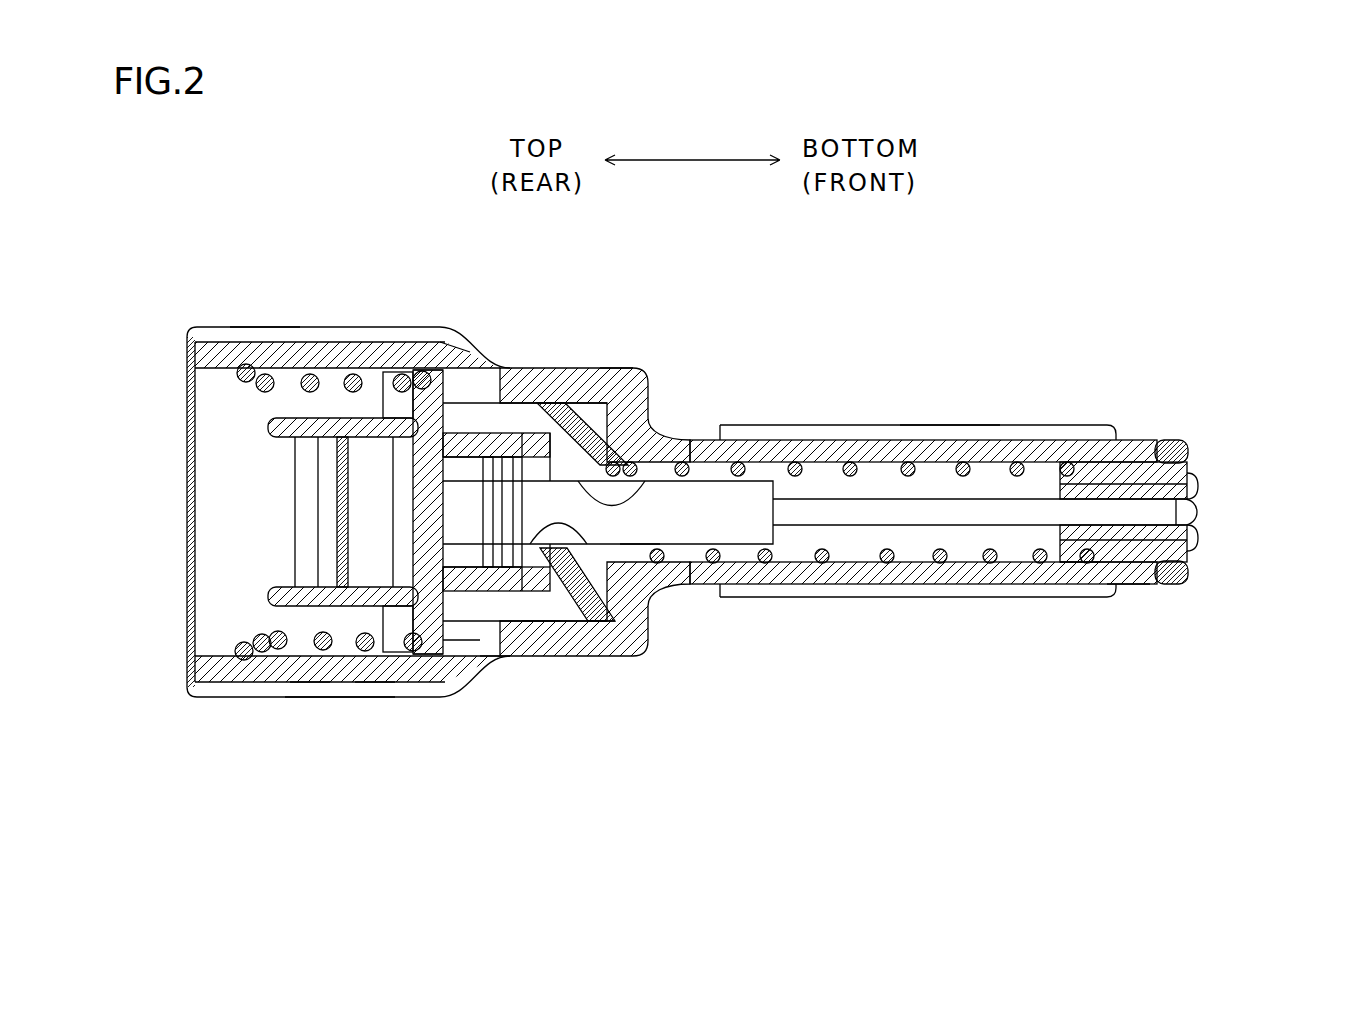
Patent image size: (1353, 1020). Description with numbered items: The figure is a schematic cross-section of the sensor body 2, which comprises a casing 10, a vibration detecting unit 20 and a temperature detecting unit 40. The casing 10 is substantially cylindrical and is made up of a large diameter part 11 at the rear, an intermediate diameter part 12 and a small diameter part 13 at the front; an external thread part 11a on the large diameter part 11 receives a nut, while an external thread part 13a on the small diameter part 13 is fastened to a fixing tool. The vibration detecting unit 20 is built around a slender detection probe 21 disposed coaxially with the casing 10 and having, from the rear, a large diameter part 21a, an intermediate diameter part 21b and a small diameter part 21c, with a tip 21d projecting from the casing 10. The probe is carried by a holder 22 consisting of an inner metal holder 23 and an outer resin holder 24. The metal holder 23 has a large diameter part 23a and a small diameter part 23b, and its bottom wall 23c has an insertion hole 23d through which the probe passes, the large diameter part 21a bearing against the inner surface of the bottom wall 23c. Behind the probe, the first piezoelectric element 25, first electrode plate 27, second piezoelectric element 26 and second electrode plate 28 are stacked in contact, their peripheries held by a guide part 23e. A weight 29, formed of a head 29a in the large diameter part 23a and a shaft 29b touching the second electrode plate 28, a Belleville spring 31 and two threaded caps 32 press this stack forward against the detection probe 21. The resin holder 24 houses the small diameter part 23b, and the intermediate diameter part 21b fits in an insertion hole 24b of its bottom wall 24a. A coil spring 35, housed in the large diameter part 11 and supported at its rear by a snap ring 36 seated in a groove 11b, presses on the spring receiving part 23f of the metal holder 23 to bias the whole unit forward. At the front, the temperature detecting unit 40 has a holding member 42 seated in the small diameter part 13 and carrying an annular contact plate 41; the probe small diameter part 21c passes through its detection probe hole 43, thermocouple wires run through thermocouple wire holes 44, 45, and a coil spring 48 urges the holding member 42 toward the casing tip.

The sensor body 2 is at (1062, 289).
The casing 10 is at (622, 351).
The large diameter part 11 is at (336, 335).
The external thread part 11a is at (247, 330).
The groove 11b is at (236, 375).
The intermediate diameter part 12 is at (578, 385).
The small diameter part 13 is at (905, 440).
The external thread part 13a is at (988, 440).
The vibration detecting unit 20 is at (345, 616).
The detection probe 21 is at (910, 544).
The large diameter part 21a is at (528, 655).
The intermediate diameter part 21b is at (637, 548).
The small diameter part 21c is at (1005, 525).
The tip 21d is at (1200, 512).
The holder 22 is at (508, 433).
The metal holder 23 is at (406, 395).
The large diameter part 23a is at (315, 390).
The small diameter part 23b is at (452, 345).
The bottom wall 23c is at (557, 433).
The insertion hole 23d is at (570, 622).
The guide part 23e is at (434, 698).
The spring receiving part 23f is at (449, 340).
The resin holder 24 is at (648, 388).
The bottom wall 24a is at (605, 630).
The insertion hole 24b is at (683, 432).
The first piezoelectric element 25 is at (508, 433).
The second piezoelectric element 26 is at (484, 433).
The first electrode plate 27 is at (493, 640).
The second electrode plate 28 is at (460, 640).
The weight 29 is at (395, 762).
The head 29a is at (308, 698).
The shaft 29b is at (373, 698).
The Belleville spring 31 is at (370, 541).
The caps 32 is at (325, 523).
The coil spring 35 is at (310, 394).
The snap ring 36 is at (236, 648).
The temperature detecting unit 40 is at (1200, 470).
The contact plate 41 is at (1192, 537).
The holding member 42 is at (1122, 462).
The detection probe hole 43 is at (1130, 586).
The thermocouple wire hole 44 is at (1170, 443).
The thermocouple wire hole 45 is at (1078, 565).
The coil spring 48 is at (822, 565).